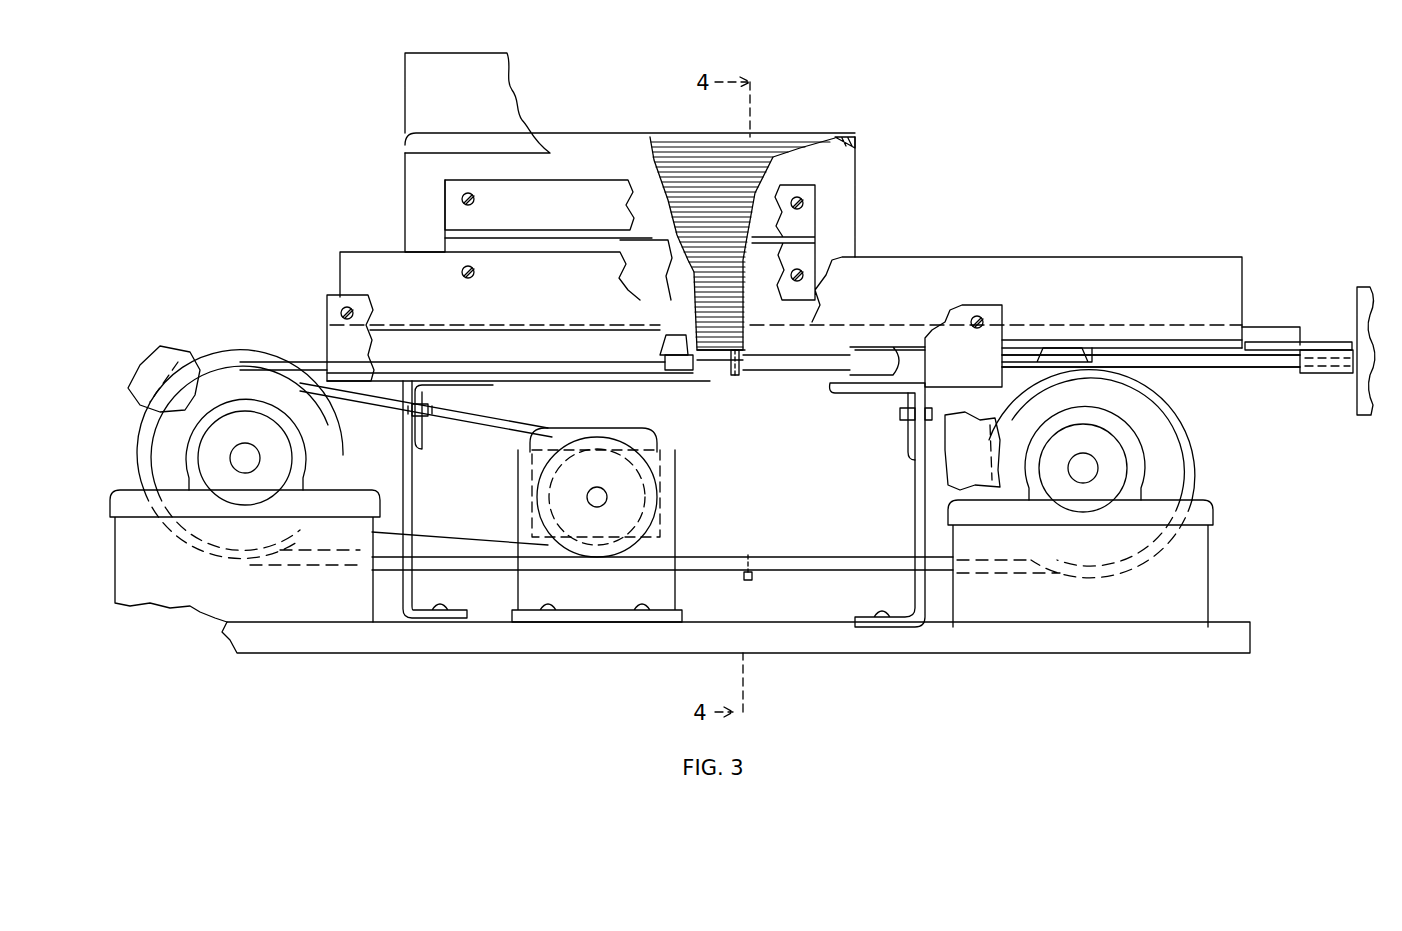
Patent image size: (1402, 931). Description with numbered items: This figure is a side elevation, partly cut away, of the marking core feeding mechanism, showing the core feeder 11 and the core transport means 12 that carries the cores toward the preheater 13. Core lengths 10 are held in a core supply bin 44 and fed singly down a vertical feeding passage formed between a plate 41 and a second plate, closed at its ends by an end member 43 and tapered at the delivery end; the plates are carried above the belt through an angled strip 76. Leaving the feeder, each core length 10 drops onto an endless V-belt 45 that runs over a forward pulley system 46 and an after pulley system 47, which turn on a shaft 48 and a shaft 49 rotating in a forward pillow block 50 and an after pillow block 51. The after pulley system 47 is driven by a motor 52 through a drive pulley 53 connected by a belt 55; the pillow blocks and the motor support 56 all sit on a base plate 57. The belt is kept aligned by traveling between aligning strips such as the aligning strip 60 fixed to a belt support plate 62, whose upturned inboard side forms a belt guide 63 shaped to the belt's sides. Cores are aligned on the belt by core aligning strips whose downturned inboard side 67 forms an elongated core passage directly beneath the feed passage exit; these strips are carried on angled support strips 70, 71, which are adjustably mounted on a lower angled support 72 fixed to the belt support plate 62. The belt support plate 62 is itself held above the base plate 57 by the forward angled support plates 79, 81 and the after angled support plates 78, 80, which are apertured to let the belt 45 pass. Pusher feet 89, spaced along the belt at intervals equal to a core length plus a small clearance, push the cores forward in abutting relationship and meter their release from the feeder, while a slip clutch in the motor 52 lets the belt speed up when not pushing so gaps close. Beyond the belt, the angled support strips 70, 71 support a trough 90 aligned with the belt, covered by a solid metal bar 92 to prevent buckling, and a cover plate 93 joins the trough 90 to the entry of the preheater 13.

The core length 10 is at (752, 137).
The core feeder 11 is at (875, 197).
The core transport means 12 is at (1262, 316).
The preheater 13 is at (1354, 280).
The plate 41 is at (415, 187).
The end member 43 is at (842, 142).
The core supply bin 44 is at (420, 85).
The endless V-belt 45 is at (790, 365).
The forward pulley system 46 is at (1160, 453).
The after pulley system 47 is at (160, 437).
The shaft 48 is at (1082, 470).
The shaft 49 is at (237, 462).
The forward pillow block 50 is at (1137, 508).
The after pillow block 51 is at (193, 490).
The motor 52 is at (657, 452).
The drive pulley 53 is at (660, 486).
The belt 55 is at (515, 425).
The motor support 56 is at (668, 545).
The base plate 57 is at (733, 645).
The aligning strip 60 is at (680, 363).
The belt support plate 62 is at (597, 372).
The belt guide 63 is at (670, 368).
The inboard side 67 is at (667, 345).
The angled support strip 70 is at (784, 316).
The angled support strip 71 is at (646, 270).
The lower angled support 72 is at (337, 337).
The angled strip 76 is at (548, 209).
The after angled support plate 78 is at (915, 588).
The forward angled support plate 79 is at (910, 442).
The after angled support plate 80 is at (405, 592).
The forward angled support plate 81 is at (420, 441).
The pusher foot 89 is at (750, 376).
The trough 90 is at (1237, 363).
The solid metal bar 92 is at (1263, 333).
The cover plate 93 is at (1312, 345).